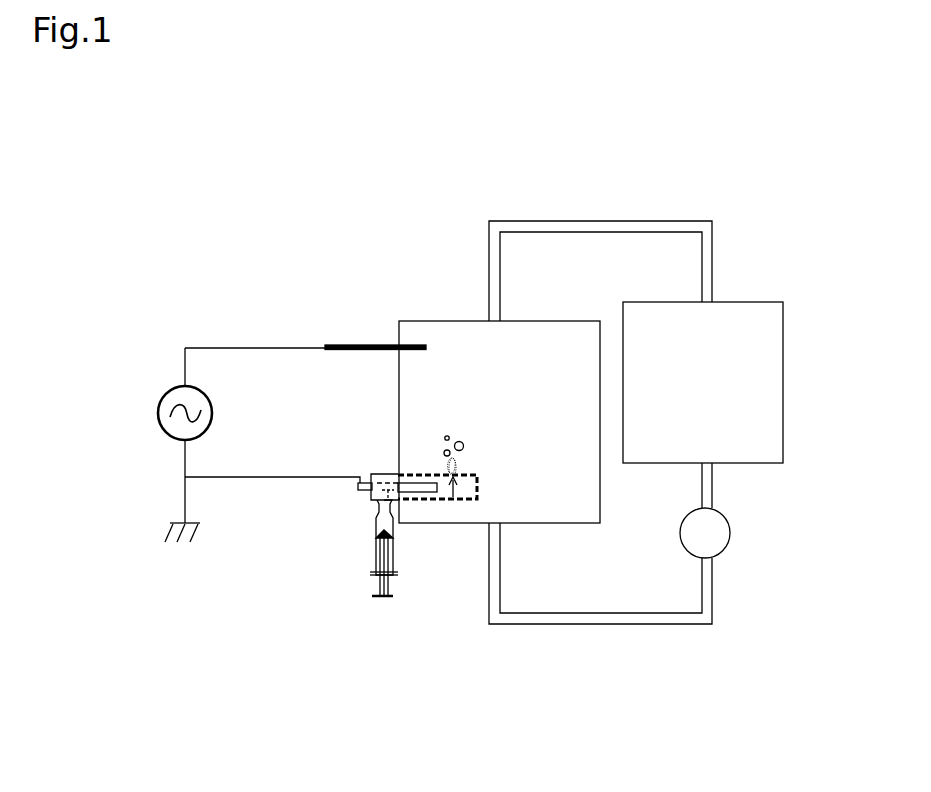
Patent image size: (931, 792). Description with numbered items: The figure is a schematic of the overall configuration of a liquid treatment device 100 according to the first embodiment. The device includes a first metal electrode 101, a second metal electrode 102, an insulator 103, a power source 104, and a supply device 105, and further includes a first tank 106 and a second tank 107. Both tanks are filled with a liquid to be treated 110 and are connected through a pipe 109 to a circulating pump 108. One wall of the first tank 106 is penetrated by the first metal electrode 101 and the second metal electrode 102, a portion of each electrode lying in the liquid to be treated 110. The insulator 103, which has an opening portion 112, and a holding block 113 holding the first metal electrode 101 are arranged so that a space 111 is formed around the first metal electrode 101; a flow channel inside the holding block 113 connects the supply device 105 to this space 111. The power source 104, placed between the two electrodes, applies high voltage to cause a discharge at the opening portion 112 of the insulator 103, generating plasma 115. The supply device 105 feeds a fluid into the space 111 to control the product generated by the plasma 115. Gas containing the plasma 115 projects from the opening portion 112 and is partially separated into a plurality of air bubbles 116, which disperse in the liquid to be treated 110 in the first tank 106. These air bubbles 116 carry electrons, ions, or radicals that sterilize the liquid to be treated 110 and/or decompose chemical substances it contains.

The liquid treatment device 100 is at (167, 207).
The first metal electrode 101 is at (362, 492).
The second metal electrode 102 is at (363, 345).
The insulator 103 is at (407, 474).
The power source 104 is at (172, 392).
The supply device 105 is at (378, 598).
The first tank 106 is at (463, 320).
The second tank 107 is at (732, 455).
The circulating pump 108 is at (718, 555).
The pipe 109 is at (628, 625).
The liquid to be treated 110 is at (587, 460).
The space 111 is at (452, 497).
The opening portion 112 is at (455, 500).
The holding block 113 is at (371, 474).
The plasma 115 is at (456, 467).
The air bubbles 116 is at (450, 435).